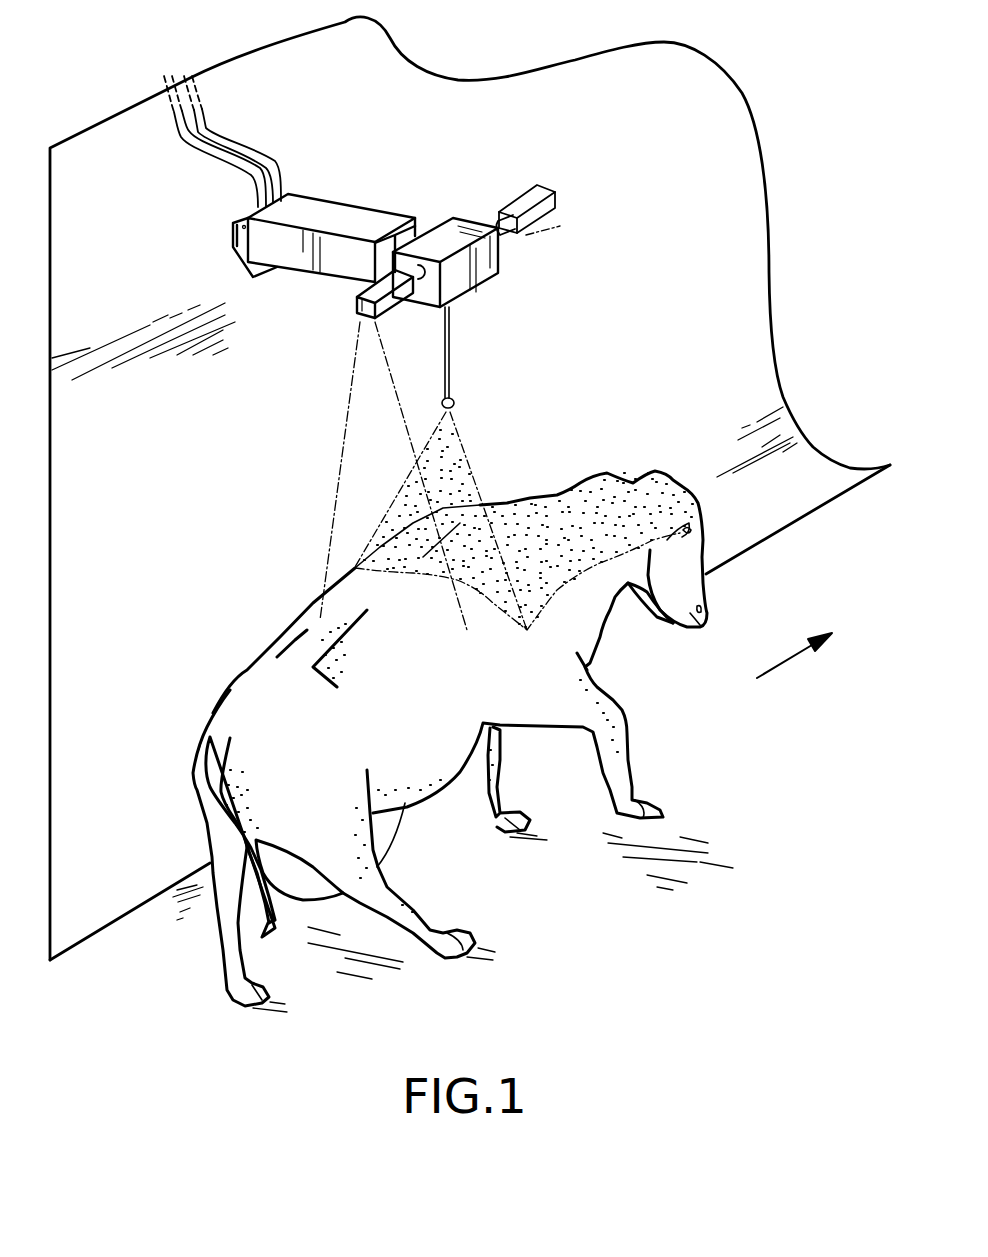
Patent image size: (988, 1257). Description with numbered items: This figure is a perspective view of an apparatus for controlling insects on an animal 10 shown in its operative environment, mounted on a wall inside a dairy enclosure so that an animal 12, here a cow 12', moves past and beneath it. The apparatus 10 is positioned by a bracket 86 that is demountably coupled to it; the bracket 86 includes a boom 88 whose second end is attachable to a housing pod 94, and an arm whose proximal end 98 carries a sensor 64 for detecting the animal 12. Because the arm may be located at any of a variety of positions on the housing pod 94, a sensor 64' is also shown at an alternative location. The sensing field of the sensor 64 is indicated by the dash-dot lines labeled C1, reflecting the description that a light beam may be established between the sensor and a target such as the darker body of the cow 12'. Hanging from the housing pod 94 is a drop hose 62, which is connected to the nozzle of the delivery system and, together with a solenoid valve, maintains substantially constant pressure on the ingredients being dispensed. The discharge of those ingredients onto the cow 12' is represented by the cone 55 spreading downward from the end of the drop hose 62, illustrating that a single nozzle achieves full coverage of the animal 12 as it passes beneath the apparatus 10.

The apparatus for controlling insects on an animal 10 is at (82, 96).
The animal 12 is at (423, 739).
The cow 12' is at (171, 716).
The cone 55 is at (470, 464).
The drop hose 62 is at (452, 343).
The sensor 64 is at (339, 313).
The alternative sensor position 64' is at (542, 171).
The bracket 86 is at (258, 243).
The boom 88 is at (414, 236).
The housing pod 94 is at (502, 252).
The proximal end 98 is at (560, 226).
The sensing beam C1 is at (332, 525).